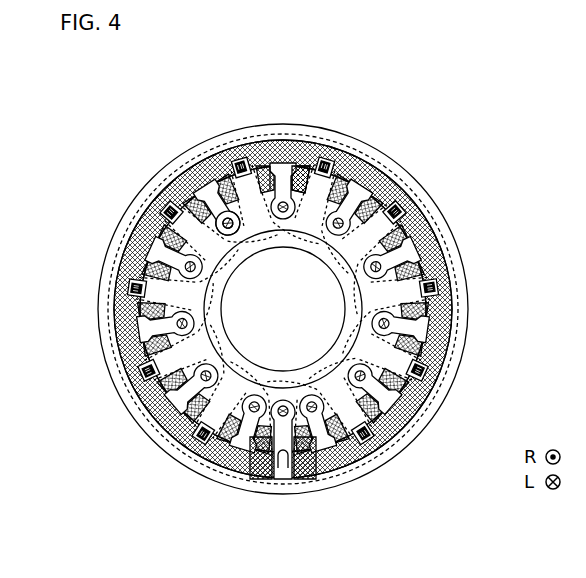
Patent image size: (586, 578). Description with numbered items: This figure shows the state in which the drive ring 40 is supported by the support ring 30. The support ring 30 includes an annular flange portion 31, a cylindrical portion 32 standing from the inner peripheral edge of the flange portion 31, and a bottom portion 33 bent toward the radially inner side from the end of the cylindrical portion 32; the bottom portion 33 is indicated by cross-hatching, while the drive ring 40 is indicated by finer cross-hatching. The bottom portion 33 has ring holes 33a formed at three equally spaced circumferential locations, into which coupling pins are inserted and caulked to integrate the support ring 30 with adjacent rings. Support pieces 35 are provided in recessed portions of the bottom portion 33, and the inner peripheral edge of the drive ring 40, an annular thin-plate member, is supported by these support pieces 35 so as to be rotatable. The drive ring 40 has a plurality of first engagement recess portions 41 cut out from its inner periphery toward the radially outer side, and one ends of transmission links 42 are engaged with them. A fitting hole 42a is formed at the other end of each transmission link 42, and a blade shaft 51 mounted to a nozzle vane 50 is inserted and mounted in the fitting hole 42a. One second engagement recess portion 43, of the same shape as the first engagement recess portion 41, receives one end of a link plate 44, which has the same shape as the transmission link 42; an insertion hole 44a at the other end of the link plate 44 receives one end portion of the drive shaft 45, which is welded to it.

The support ring 30 is at (266, 118).
The flange portion 31 is at (414, 178).
The cylindrical portion 32 is at (424, 203).
The bottom portion 33 is at (305, 180).
The ring hole 33a is at (274, 148).
The support piece 35 is at (207, 157).
The drive ring 40 is at (218, 147).
The first engagement recess portion 41 is at (183, 172).
The transmission link 42 is at (142, 220).
The fitting hole 42a is at (233, 226).
The second engagement recess portion 43 is at (283, 439).
The link plate 44 is at (305, 458).
The insertion hole 44a is at (281, 397).
The drive shaft 45 is at (261, 458).
The nozzle vane 50 is at (152, 330).
The blade shaft 51 is at (233, 224).